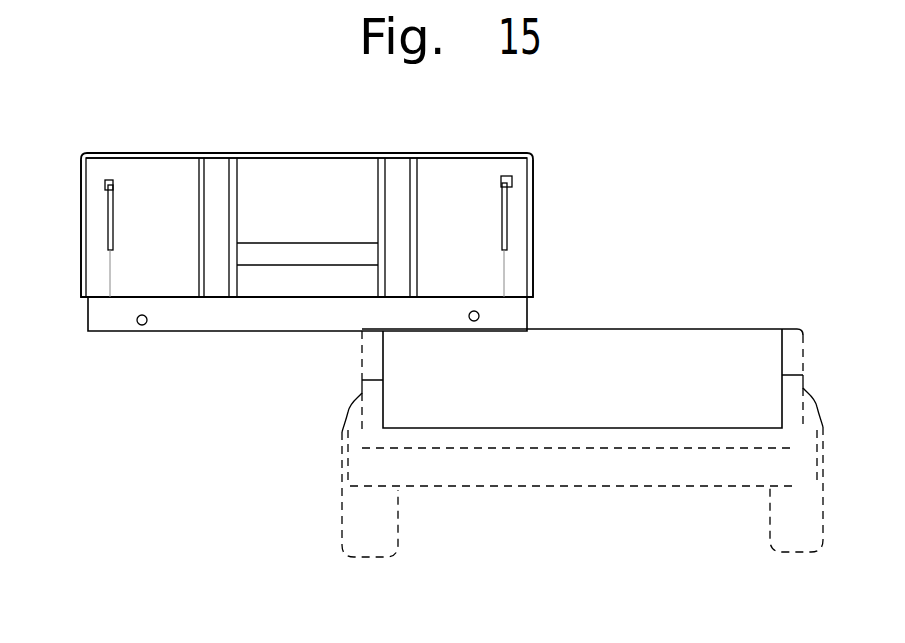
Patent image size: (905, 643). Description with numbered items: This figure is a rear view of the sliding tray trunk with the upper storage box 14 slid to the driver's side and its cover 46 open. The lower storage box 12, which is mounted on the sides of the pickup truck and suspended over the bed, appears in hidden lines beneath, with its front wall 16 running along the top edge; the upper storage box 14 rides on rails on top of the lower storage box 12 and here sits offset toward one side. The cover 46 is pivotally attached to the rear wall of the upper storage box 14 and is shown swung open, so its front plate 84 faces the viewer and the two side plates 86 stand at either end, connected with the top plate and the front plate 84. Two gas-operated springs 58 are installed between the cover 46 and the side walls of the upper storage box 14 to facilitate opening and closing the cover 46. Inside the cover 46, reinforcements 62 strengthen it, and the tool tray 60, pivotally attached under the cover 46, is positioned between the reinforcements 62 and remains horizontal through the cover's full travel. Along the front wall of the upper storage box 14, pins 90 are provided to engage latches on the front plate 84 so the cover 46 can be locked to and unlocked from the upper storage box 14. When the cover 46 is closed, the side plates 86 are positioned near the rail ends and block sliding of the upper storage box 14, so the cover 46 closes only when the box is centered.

The lower storage box 12 is at (750, 328).
The upper storage box 14 is at (562, 306).
The front wall 16 is at (667, 335).
The cover 46 is at (507, 152).
The gas-operated spring 58 is at (113, 200).
The tool tray 60 is at (347, 242).
The reinforcement 62 is at (238, 172).
The front plate 84 is at (317, 153).
The side plate 86 is at (81, 233).
The pin 90 is at (142, 326).